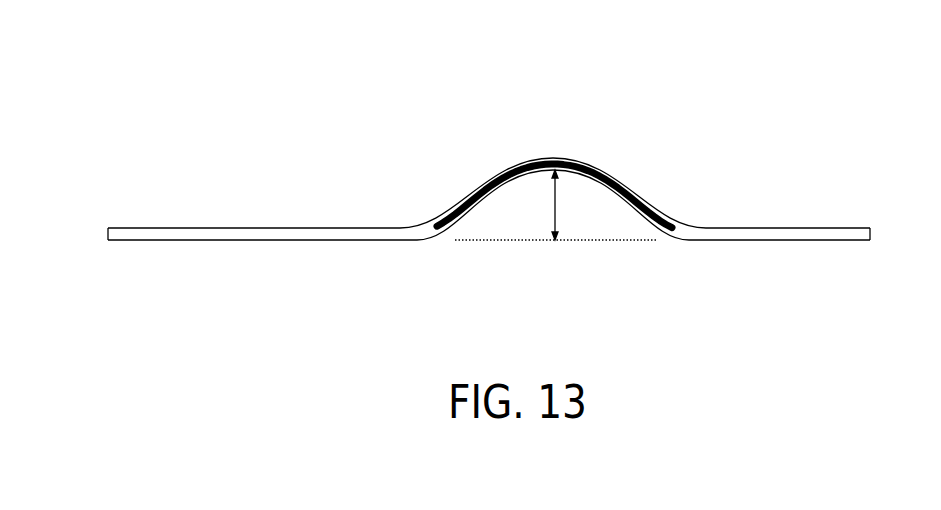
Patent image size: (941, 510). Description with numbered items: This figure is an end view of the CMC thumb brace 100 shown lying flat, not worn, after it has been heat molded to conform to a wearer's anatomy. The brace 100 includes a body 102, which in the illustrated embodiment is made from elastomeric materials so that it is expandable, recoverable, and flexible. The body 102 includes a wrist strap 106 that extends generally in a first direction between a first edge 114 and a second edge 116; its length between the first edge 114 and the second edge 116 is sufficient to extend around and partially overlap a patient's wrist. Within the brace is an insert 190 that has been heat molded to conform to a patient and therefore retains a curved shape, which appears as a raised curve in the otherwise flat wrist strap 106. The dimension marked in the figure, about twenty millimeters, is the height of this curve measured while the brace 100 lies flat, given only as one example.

The brace 100 is at (330, 145).
The body 102 is at (512, 167).
The wrist strap 106 is at (263, 228).
The first edge 114 is at (873, 236).
The second edge 116 is at (107, 232).
The insert 190 is at (640, 189).